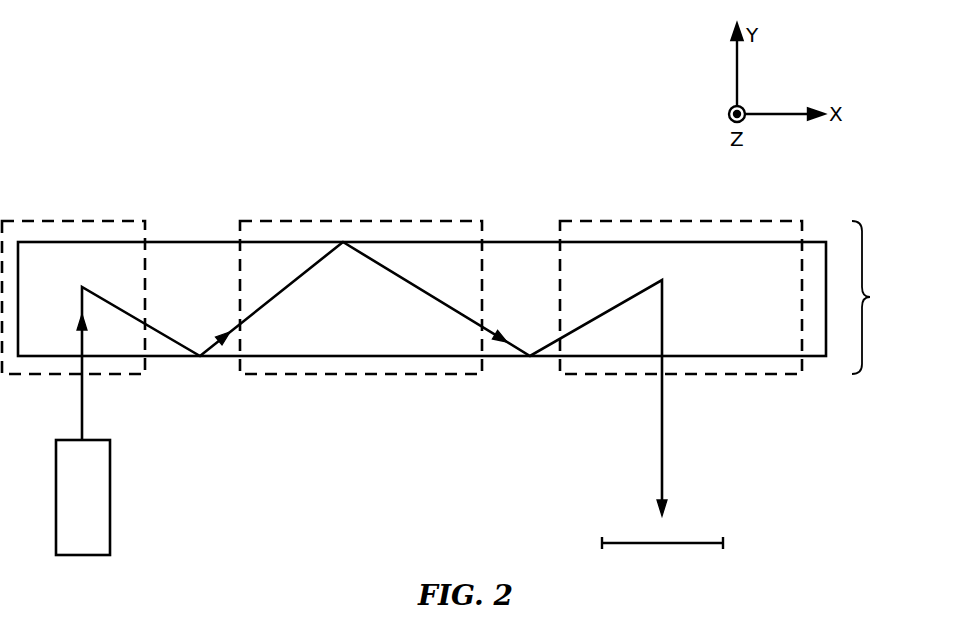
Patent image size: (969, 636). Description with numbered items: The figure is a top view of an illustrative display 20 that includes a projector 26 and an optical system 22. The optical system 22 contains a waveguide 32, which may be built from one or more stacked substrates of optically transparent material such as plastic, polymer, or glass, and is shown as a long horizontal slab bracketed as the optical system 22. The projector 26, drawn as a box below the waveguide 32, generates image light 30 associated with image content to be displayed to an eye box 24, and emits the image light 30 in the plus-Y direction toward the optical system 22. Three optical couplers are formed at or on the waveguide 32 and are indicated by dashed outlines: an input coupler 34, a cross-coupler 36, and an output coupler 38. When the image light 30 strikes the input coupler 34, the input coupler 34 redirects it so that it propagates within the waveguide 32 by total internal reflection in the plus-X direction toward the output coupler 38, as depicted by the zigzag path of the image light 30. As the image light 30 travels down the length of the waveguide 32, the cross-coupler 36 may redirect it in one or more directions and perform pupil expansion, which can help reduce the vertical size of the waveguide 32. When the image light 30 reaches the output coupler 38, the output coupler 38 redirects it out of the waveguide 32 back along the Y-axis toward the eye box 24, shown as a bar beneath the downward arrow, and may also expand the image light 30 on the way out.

The display 20 is at (422, 66).
The optical system 22 is at (877, 297).
The eye box 24 is at (724, 543).
The projector 26 is at (111, 495).
The image light 30 is at (83, 400).
The waveguide 32 is at (191, 241).
The input coupler 34 is at (59, 220).
The cross-coupler 36 is at (366, 220).
The output coupler 38 is at (686, 220).